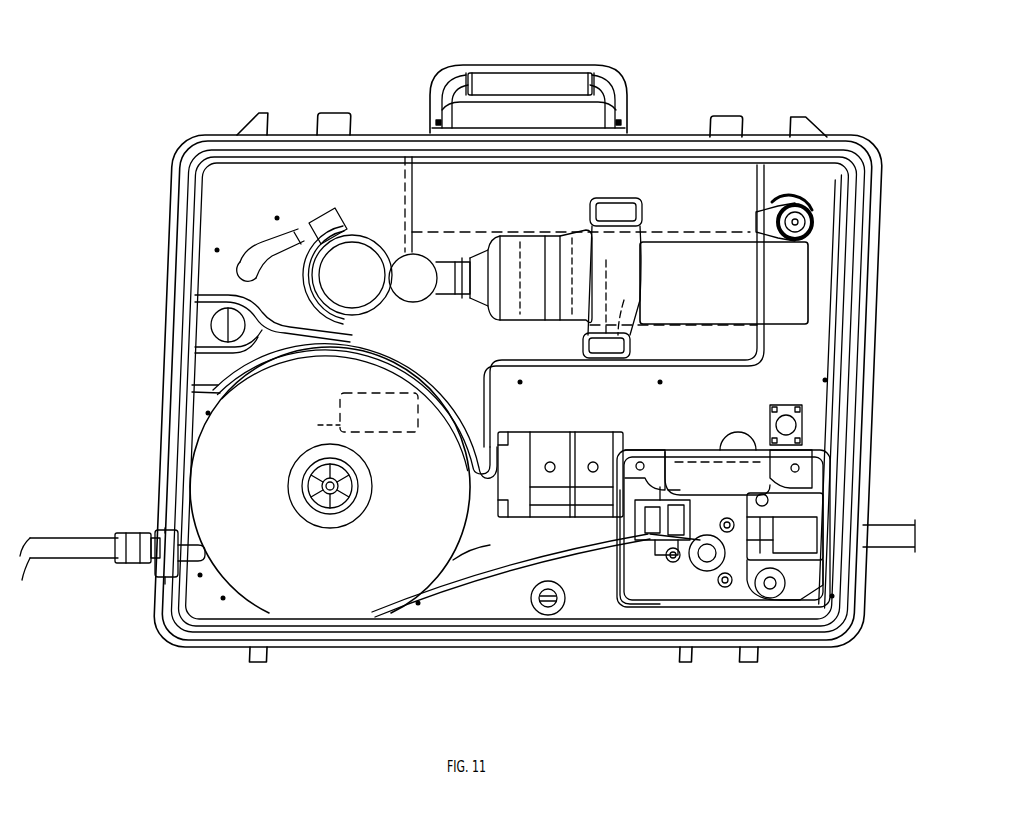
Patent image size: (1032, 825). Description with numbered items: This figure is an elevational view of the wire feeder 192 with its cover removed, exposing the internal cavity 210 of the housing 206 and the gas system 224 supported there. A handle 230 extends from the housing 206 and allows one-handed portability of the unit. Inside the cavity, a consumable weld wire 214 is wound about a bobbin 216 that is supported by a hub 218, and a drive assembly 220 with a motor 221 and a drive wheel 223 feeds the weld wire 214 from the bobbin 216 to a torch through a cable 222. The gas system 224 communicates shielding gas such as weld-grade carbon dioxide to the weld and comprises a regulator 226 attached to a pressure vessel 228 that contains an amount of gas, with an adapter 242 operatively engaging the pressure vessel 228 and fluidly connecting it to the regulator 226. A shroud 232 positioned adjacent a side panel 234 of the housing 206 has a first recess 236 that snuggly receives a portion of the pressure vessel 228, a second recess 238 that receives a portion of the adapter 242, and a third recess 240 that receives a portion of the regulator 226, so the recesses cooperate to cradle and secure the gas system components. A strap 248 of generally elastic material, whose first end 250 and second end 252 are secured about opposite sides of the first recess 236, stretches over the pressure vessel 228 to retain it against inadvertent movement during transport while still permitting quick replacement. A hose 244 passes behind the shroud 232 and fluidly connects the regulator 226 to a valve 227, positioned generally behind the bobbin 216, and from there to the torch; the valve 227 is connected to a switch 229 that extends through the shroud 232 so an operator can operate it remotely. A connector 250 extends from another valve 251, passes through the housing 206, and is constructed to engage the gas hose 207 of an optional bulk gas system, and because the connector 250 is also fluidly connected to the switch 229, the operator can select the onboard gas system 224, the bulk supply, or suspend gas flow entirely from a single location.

The wire feeder 192 is at (376, 40).
The housing 206 is at (197, 140).
The internal cavity 210 is at (822, 180).
The gas system 224 is at (777, 185).
The handle 230 is at (548, 72).
The second recess 238 is at (440, 248).
The regulator 226 is at (373, 284).
The hose 244 is at (252, 256).
The third recess 240 is at (290, 300).
The adapter 242 is at (476, 250).
The shroud 232 is at (473, 344).
The strap 248 is at (614, 280).
The connector 250 is at (606, 212).
The second end 252 is at (608, 352).
The pressure vessel 228 is at (758, 294).
The first recess 236 is at (703, 335).
The valve 227 is at (318, 425).
The bobbin 216 is at (313, 566).
The hub 218 is at (310, 498).
The weld wire 214 is at (462, 586).
The side panel 234 is at (453, 560).
The motor 221 is at (680, 578).
The drive assembly 220 is at (734, 488).
The drive wheel 223 is at (753, 563).
The switch 229 is at (548, 608).
The gas hose 207 is at (60, 530).
The valve 251 is at (180, 614).
The cable 222 is at (893, 546).